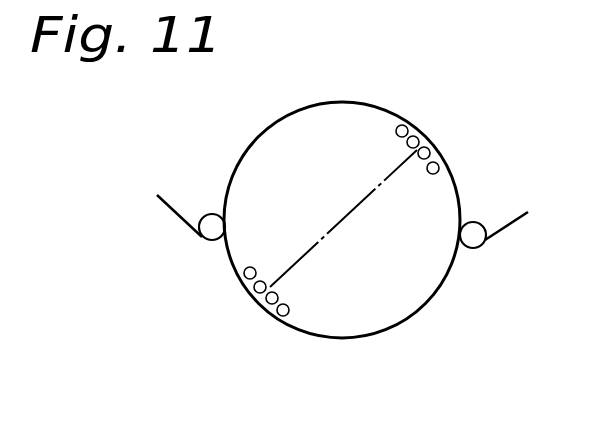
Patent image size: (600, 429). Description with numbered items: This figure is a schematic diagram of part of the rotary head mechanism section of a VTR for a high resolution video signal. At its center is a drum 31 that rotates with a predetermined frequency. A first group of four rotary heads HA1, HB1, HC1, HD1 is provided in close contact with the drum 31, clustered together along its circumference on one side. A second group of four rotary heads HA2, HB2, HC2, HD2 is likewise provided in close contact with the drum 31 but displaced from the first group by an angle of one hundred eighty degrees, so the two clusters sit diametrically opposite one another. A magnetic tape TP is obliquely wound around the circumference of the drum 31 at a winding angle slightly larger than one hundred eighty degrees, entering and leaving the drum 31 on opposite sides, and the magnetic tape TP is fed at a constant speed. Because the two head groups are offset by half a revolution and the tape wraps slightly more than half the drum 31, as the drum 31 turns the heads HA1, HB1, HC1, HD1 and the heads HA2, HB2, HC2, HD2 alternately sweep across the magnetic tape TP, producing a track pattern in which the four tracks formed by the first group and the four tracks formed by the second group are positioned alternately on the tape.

The drum 31 is at (437, 292).
The magnetic tape TP is at (168, 200).
The rotary head HA1 is at (441, 173).
The rotary head HB1 is at (431, 154).
The rotary head HC1 is at (417, 146).
The rotary head HD1 is at (404, 121).
The rotary head HA2 is at (243, 273).
The rotary head HB2 is at (252, 292).
The rotary head HC2 is at (266, 310).
The rotary head HD2 is at (286, 321).